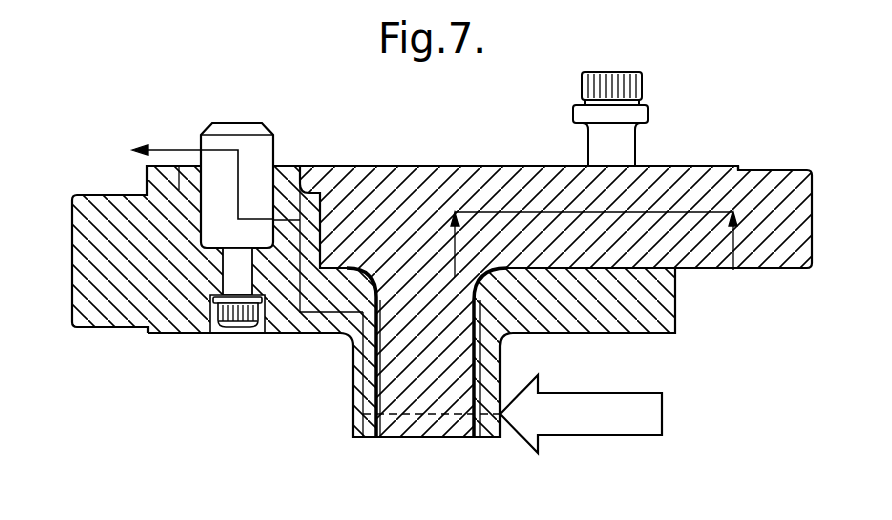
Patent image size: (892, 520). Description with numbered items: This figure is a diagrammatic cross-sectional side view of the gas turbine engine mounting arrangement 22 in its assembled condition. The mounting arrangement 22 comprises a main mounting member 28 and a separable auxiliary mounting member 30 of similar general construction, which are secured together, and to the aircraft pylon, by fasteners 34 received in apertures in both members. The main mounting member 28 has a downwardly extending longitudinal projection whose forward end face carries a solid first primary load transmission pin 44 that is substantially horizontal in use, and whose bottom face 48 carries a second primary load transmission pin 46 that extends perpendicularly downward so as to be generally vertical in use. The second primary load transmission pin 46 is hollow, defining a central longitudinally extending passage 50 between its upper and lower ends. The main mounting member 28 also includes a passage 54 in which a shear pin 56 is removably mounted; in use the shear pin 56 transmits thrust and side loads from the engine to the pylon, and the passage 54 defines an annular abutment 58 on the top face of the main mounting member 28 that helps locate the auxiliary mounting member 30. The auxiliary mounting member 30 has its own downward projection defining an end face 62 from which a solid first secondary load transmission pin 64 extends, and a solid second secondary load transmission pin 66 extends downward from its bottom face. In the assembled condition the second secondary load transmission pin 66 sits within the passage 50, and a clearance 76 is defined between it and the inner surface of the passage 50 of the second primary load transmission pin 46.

The mounting arrangement 22 is at (702, 97).
The main mounting member 28 is at (297, 321).
The auxiliary mounting member 30 is at (388, 191).
The fastener 34 is at (614, 72).
The first primary load transmission pin 44 is at (100, 248).
The second primary load transmission pin 46 is at (366, 439).
The bottom face 48 is at (322, 335).
The passage 50 is at (381, 429).
The passage 54 is at (201, 227).
The shear pin 56 is at (245, 140).
The annular abutment 58 is at (283, 175).
The end face 62 is at (740, 166).
The first secondary load transmission pin 64 is at (795, 210).
The second secondary load transmission pin 66 is at (437, 429).
The clearance 76 is at (478, 428).